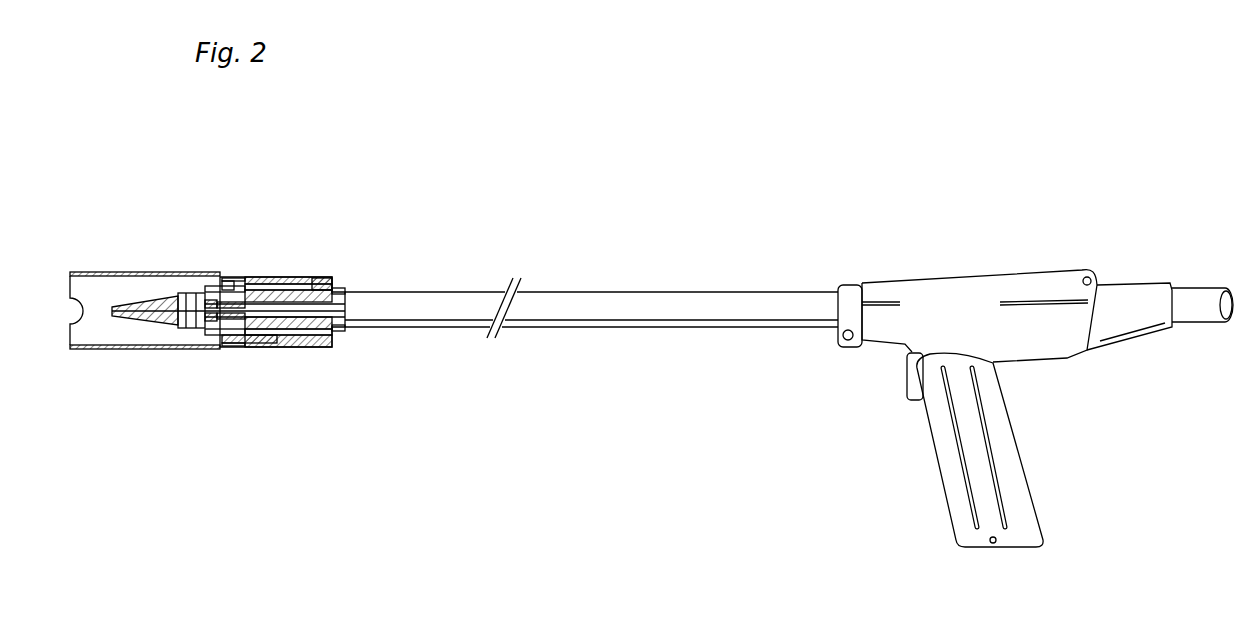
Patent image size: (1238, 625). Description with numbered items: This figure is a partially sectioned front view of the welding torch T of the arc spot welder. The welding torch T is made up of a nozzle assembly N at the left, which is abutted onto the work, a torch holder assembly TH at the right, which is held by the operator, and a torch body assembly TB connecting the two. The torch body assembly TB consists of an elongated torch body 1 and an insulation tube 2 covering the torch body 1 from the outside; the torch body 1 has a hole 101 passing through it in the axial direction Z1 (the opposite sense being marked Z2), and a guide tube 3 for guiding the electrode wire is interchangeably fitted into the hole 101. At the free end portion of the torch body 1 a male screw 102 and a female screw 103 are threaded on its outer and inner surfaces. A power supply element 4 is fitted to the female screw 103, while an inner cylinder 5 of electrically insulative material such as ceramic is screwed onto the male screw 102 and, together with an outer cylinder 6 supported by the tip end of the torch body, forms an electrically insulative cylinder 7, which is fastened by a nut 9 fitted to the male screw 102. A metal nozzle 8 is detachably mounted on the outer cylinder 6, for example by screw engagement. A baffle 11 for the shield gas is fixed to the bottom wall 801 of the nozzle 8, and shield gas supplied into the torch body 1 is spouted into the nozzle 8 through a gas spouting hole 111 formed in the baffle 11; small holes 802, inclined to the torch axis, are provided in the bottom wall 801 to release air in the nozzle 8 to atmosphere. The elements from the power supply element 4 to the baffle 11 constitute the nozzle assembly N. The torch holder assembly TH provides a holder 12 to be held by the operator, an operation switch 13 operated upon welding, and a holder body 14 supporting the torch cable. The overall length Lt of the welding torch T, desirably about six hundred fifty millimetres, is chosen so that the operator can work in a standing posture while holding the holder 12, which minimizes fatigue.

The elongated torch body 1 is at (338, 290).
The insulation tube 2 is at (327, 278).
The guide tube 3 is at (275, 298).
The power supply element 4 is at (150, 302).
The inner cylinder 5 is at (288, 259).
The outer cylinder 6 is at (287, 285).
The electrically insulative cylinder 7 is at (282, 268).
The nozzle 8 is at (120, 272).
The nut 9 is at (304, 347).
The baffle 11 is at (190, 332).
The holder 12 is at (1005, 457).
The operation switch 13 is at (995, 365).
The holder body 14 is at (1043, 347).
The hole 101 is at (242, 345).
The male screw 102 is at (148, 324).
The female screw 103 is at (272, 348).
The gas spouting hole 111 is at (212, 333).
The bottom wall 801 is at (209, 286).
The small hole 802 is at (222, 284).
The nozzle assembly N is at (90, 353).
The welding torch T is at (805, 349).
The torch body assembly TB is at (566, 292).
The torch holder assembly TH is at (1140, 352).
The length of the welding torch Lt is at (70, 272).
The axial direction Z1 is at (735, 205).
The direction Z2 is at (722, 217).